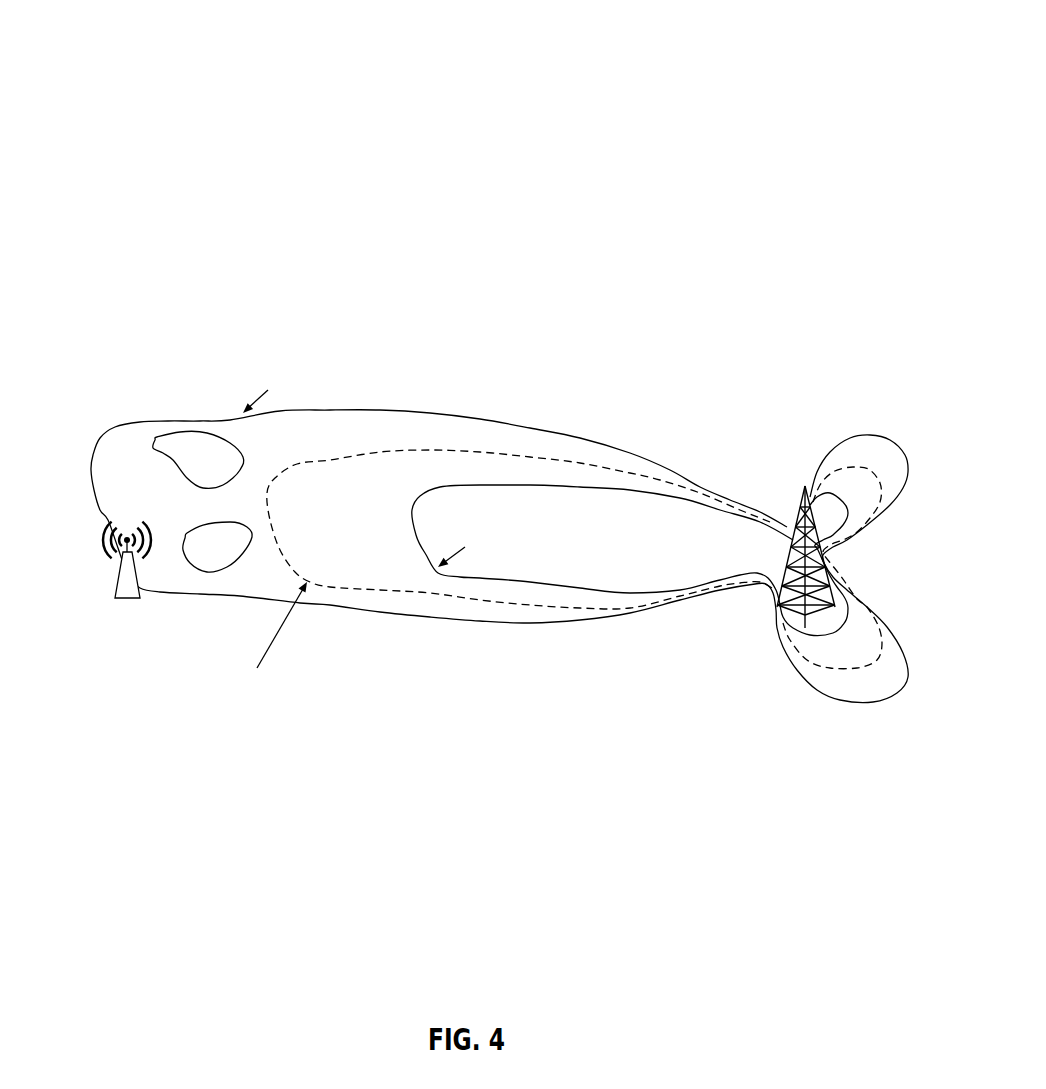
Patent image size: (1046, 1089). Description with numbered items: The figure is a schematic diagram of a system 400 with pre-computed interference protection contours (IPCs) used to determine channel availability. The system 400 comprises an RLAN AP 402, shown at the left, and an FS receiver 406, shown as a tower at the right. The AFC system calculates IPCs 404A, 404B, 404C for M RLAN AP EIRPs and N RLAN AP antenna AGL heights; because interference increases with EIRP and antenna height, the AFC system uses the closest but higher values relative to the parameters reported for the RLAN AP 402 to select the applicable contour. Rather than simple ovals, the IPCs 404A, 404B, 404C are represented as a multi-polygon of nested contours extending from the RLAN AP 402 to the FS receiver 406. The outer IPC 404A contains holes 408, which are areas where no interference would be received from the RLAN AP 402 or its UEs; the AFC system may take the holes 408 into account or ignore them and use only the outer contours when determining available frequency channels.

The system 400 is at (468, 41).
The RLAN AP 402 is at (108, 578).
The IPC 404A is at (443, 413).
The IPC 404B is at (493, 450).
The IPC 404C is at (585, 480).
The FS receiver 406 is at (802, 472).
The holes 408 is at (165, 432).